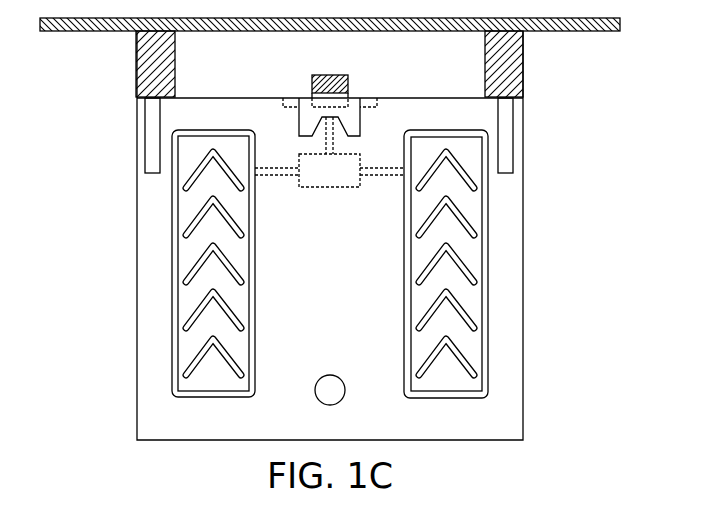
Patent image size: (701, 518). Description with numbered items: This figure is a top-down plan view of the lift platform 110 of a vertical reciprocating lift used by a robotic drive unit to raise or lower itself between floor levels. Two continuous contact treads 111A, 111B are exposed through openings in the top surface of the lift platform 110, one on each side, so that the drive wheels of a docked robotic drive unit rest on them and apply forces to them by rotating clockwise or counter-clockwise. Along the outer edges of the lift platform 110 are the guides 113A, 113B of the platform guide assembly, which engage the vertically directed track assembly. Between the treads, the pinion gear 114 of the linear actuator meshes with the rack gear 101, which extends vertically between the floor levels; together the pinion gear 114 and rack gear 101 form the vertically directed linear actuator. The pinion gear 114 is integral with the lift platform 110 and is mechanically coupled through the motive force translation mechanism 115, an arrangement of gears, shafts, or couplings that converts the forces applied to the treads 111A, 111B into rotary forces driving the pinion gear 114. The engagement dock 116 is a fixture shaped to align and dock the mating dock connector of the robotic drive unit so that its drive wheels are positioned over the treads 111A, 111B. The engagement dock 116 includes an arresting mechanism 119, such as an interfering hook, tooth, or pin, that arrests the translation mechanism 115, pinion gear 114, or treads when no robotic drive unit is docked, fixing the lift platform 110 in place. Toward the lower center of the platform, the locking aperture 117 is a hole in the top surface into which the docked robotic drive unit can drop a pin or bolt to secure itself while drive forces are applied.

The rack gear 101 is at (338, 83).
The lift platform 110 is at (538, 212).
The continuous contact tread 111A is at (472, 303).
The continuous contact tread 111B is at (193, 298).
The guide 113A is at (506, 137).
The guide 113B is at (155, 132).
The pinion gear 114 is at (283, 105).
The motive force translation mechanism 115 is at (322, 182).
The engagement dock 116 is at (348, 112).
The locking aperture 117 is at (333, 390).
The arresting mechanism 119 is at (322, 103).